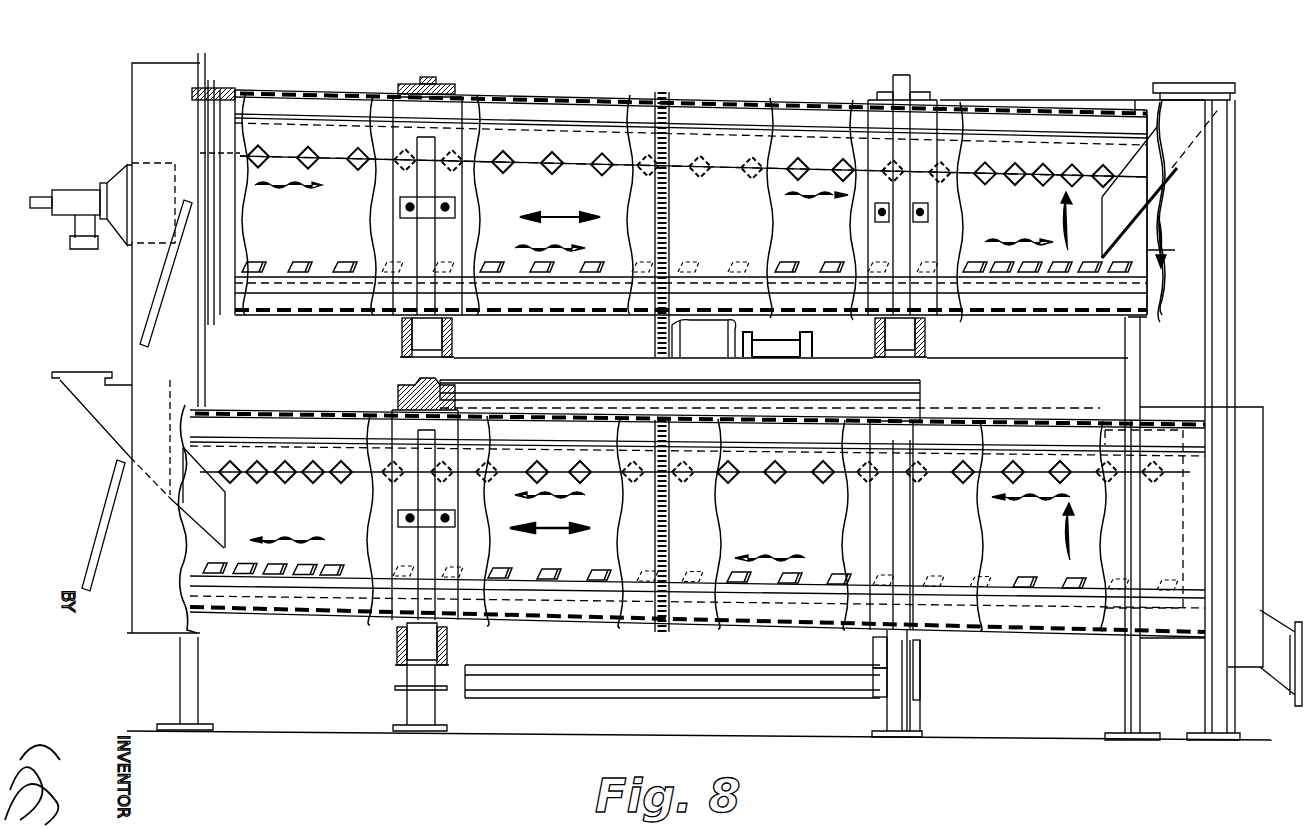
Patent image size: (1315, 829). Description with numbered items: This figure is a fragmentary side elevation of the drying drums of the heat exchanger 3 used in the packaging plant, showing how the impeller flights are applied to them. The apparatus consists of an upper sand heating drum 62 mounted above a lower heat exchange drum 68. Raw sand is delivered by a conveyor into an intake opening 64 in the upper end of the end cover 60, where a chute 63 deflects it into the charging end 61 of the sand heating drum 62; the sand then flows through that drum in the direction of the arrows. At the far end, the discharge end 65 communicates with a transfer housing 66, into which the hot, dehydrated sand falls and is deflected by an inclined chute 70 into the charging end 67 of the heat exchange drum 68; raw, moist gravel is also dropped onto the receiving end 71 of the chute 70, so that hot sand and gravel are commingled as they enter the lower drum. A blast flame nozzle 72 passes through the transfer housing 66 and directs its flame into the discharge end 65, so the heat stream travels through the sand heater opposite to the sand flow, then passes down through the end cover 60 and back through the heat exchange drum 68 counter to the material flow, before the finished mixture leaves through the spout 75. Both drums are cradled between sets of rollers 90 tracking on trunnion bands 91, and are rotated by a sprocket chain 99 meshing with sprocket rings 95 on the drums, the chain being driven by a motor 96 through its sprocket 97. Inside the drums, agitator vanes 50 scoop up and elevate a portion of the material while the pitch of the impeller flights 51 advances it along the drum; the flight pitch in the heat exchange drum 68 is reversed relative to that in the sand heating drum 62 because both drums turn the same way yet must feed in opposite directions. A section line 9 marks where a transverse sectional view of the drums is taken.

The heat exchanger 3 is at (962, 97).
The section line 9- 9 is at (380, 110).
The agitator vanes 50 is at (308, 266).
The impeller flights 51 is at (322, 162).
The end cover 60 is at (1172, 358).
The charging end 61 is at (1147, 253).
The sand heating drum 62 is at (798, 102).
The chute 63 is at (1165, 182).
The intake opening 64 is at (1185, 88).
The discharge end 65 is at (200, 143).
The transfer housing 66 is at (138, 275).
The charging end 67 is at (178, 506).
The heat exchange drum 68 is at (250, 612).
The inclined chute 70 is at (80, 395).
The receiving end 71 is at (85, 375).
The blast flame nozzle 72 is at (70, 207).
The spout 75 is at (1290, 688).
The rollers 90 is at (440, 328).
The trunnion bands 91 is at (432, 82).
The sprocket rings 95 is at (670, 193).
The motor 96 is at (735, 345).
The sprocket 97 is at (660, 338).
The sprocket chain 99 is at (672, 236).